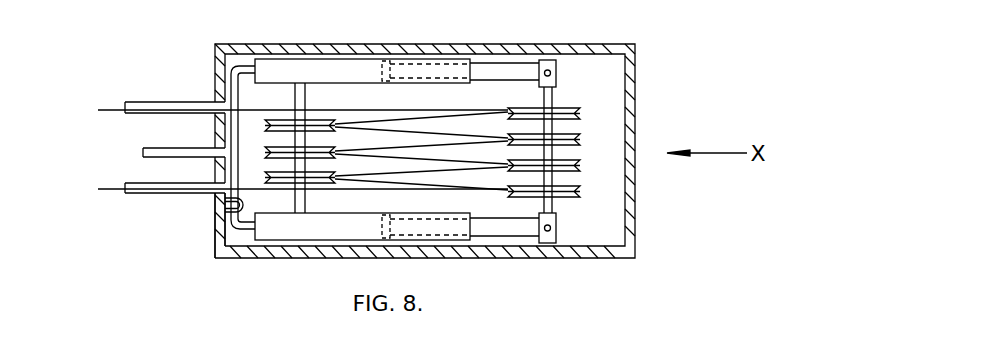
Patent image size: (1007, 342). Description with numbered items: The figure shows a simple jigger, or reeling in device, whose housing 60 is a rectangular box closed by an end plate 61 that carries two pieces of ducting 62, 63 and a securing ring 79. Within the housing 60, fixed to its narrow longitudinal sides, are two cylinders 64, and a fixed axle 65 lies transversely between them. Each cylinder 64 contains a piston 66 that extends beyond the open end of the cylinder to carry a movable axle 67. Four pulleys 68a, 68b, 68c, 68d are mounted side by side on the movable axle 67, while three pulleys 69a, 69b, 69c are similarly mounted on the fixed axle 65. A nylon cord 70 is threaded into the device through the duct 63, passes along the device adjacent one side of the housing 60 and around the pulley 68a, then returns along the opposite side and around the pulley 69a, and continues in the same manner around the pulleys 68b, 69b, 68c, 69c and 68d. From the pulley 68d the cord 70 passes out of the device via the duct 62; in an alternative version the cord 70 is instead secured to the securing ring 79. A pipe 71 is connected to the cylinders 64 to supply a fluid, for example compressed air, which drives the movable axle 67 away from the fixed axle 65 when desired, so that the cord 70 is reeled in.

The housing 60 is at (583, 46).
The end plate 61 is at (213, 226).
The ducting 62 is at (140, 182).
The ducting 63 is at (172, 103).
The cylinder 64 is at (285, 65).
The fixed axle 65 is at (301, 92).
The piston 66 is at (493, 232).
The movable axle 67 is at (551, 100).
The pulley 68a is at (578, 117).
The pulley 68b is at (580, 142).
The pulley 68c is at (580, 170).
The pulley 68d is at (580, 192).
The pulley 69a is at (270, 120).
The pulley 69b is at (267, 150).
The pulley 69c is at (265, 175).
The nylon cord 70 is at (113, 109).
The pipe 71 is at (147, 149).
The securing ring 79 is at (220, 200).